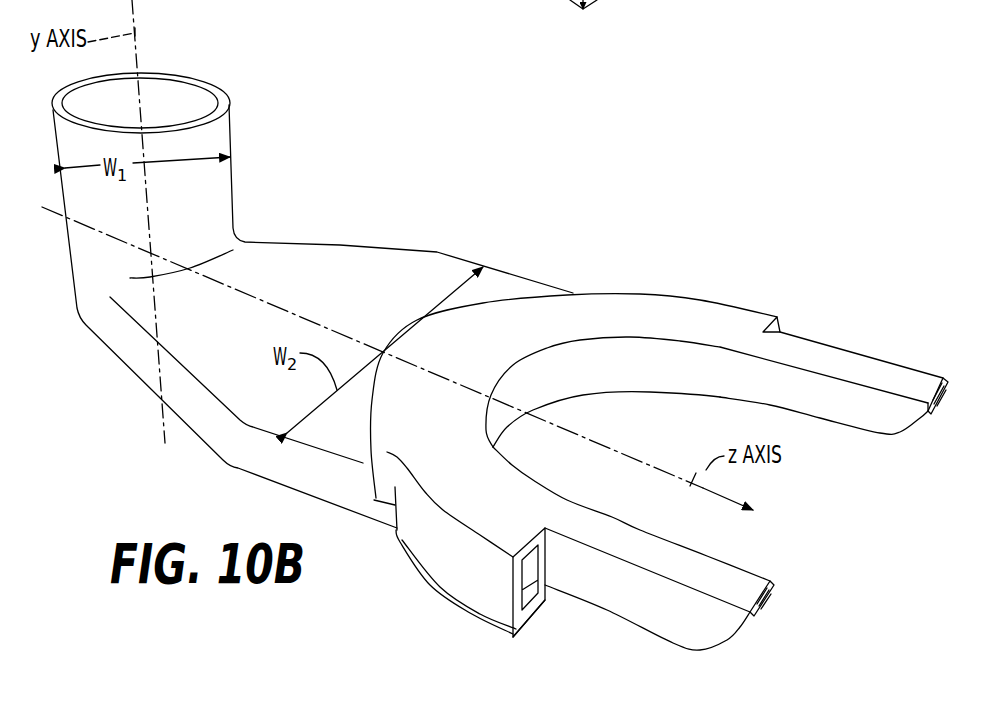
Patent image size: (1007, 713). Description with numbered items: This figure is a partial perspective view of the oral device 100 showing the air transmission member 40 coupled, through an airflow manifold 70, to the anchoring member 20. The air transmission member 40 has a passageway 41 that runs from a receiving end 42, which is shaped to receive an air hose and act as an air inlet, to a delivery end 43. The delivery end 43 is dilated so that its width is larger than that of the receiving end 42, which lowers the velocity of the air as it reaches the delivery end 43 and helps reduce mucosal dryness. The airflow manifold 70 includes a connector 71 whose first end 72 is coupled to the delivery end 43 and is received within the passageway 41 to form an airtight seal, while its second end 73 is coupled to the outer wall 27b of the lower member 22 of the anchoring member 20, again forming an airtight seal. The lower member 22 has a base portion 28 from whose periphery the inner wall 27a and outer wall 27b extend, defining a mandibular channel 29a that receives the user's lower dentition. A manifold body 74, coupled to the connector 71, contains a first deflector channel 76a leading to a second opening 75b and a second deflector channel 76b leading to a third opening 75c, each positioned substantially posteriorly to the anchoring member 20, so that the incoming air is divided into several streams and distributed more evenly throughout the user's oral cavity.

The oral device 100 is at (422, 130).
The air transmission member 40 is at (312, 280).
The passageway 41 is at (163, 83).
The receiving end 42 is at (203, 103).
The delivery end 43 is at (575, 292).
The anchoring member 20 is at (636, 456).
The airflow manifold 70 is at (717, 344).
The first end 72 is at (878, 357).
The base portion 28 is at (925, 388).
The second deflector channel 76b is at (790, 317).
The third opening 75c is at (789, 332).
The lower member 22 is at (383, 511).
The connector 71 is at (433, 585).
The manifold body 74 is at (478, 570).
The second end 73 is at (530, 609).
The first deflector channel 76a is at (537, 608).
The second opening 75b is at (528, 627).
The inner wall 27a is at (765, 608).
The outer wall 27b is at (732, 642).
The mandibular channel 29a is at (762, 615).